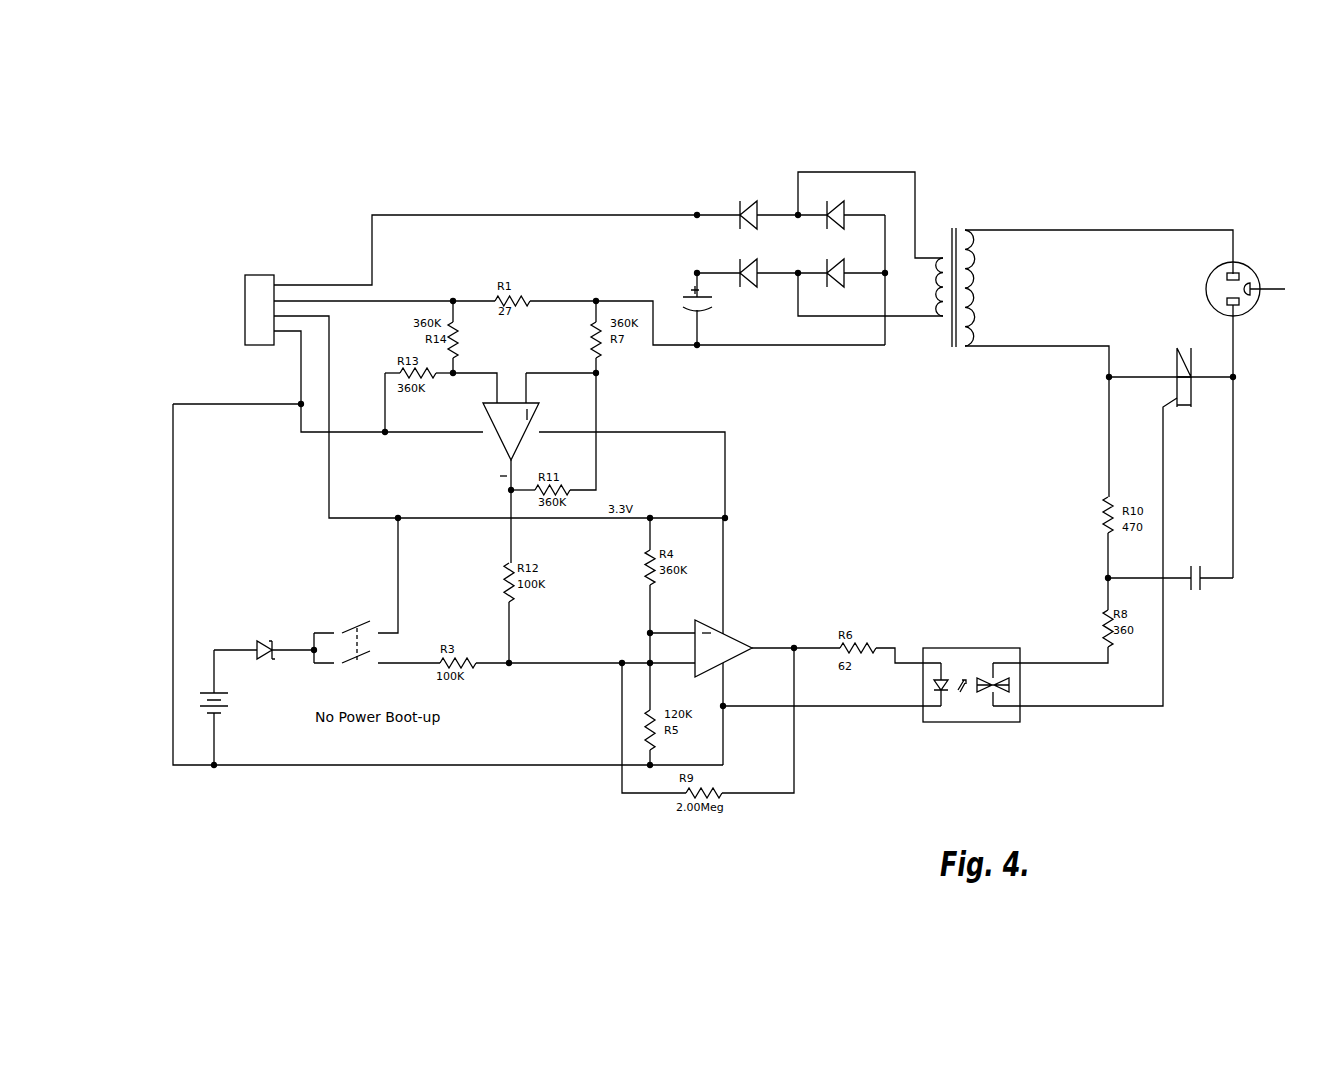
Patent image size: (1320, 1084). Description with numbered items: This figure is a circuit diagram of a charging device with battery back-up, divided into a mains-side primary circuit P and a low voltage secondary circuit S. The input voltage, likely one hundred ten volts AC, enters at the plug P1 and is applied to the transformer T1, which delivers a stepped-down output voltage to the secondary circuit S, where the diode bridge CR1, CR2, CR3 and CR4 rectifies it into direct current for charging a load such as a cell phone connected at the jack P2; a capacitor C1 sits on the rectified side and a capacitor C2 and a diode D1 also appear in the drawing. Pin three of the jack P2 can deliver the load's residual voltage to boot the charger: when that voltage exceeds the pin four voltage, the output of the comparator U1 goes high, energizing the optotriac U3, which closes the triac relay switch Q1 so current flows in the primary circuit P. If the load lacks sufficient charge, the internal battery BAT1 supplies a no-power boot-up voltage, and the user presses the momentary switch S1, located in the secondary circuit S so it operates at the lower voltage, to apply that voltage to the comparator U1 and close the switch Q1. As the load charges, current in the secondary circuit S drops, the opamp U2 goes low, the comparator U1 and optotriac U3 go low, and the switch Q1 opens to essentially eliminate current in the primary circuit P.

The secondary circuit S is at (487, 215).
The primary circuit P is at (1022, 228).
The jack P2 is at (201, 302).
The plug P1 is at (1245, 411).
The transformer T1 is at (955, 278).
The comparator U1 is at (808, 641).
The opamp U2 is at (567, 474).
The optotriac U3 is at (971, 684).
The triac relay switch Q1 is at (1114, 512).
The capacitor C1 is at (701, 309).
The capacitor C2 is at (1170, 565).
The diode CR1 is at (747, 207).
The diode CR2 is at (747, 265).
The diode CR3 is at (841, 207).
The diode CR4 is at (841, 265).
The diode D1 is at (264, 660).
The momentary switch S1 is at (376, 605).
The internal battery BAT1 is at (229, 709).